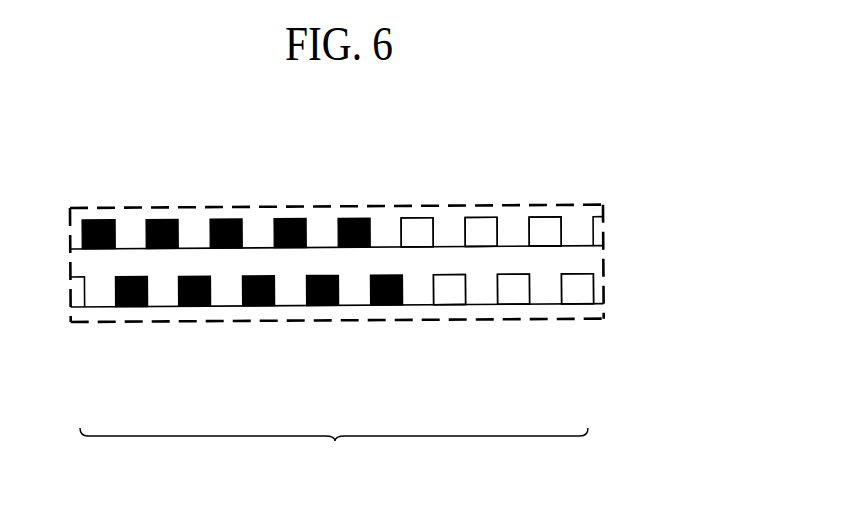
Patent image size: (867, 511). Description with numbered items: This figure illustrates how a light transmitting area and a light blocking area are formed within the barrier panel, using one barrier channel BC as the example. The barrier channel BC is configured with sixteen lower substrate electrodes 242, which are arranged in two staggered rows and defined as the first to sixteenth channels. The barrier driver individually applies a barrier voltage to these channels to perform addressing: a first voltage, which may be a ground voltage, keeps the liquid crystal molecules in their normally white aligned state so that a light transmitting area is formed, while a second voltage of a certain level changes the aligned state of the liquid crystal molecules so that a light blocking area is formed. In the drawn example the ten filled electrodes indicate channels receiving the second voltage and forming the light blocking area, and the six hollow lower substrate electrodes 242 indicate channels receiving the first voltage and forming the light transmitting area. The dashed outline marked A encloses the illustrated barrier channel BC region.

The region A of the display panel A is at (603, 204).
The lower substrate electrodes 242 is at (583, 288).
The barrier channel BC is at (334, 448).